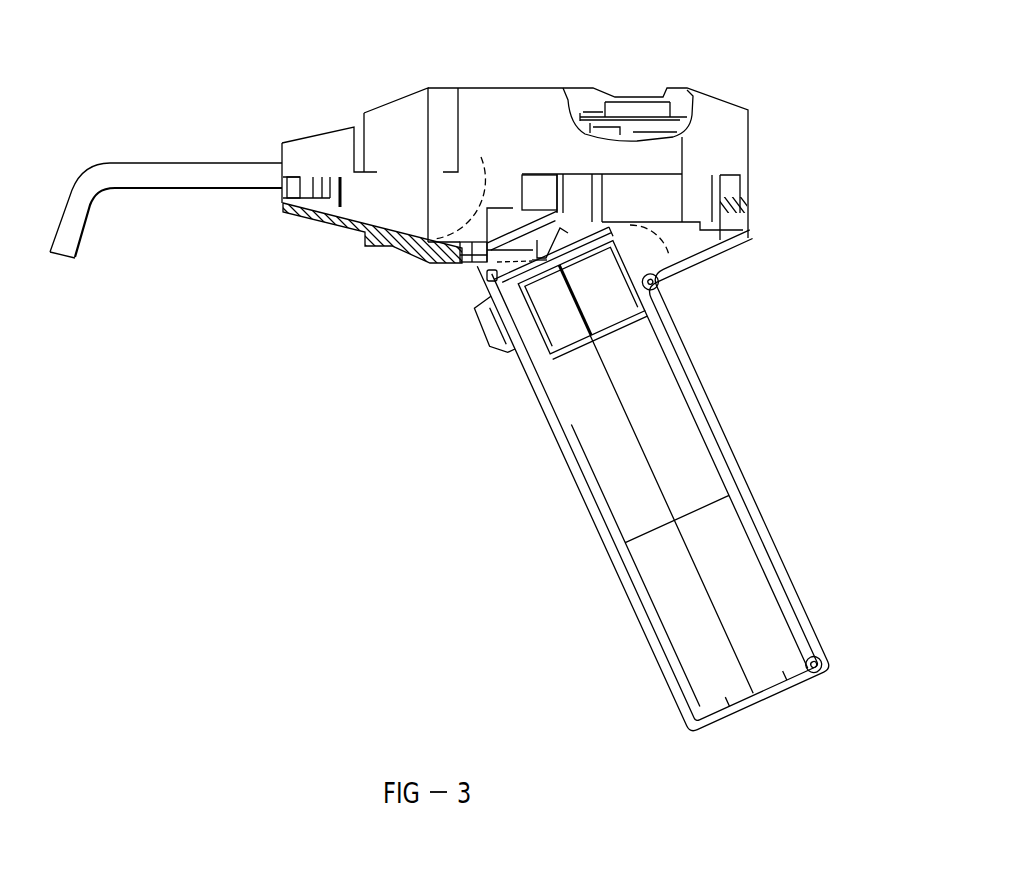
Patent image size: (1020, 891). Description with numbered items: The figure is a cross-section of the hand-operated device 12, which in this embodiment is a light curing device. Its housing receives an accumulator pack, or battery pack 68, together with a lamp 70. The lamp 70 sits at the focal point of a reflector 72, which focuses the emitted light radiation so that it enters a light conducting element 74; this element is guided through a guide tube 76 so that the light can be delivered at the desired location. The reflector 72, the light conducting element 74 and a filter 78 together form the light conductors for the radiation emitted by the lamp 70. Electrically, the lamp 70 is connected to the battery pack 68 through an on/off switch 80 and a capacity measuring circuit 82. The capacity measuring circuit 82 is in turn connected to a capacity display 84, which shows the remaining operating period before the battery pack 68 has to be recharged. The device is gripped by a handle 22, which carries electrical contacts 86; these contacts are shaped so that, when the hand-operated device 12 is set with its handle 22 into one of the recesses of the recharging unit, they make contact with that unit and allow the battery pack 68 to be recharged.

The hand-operated device 12 is at (489, 384).
The handle 22 is at (765, 520).
The accumulator pack (battery pack) 68 is at (598, 450).
The lamp 70 is at (442, 193).
The reflector 72 is at (465, 226).
The light conducting element 74 is at (127, 178).
The guide tube 76 is at (78, 253).
The filter 78 is at (322, 200).
The on/off switch 80 is at (482, 347).
The capacity measuring circuit 82 is at (617, 283).
The capacity display 84 is at (660, 118).
The electrical contacts 86 is at (822, 655).